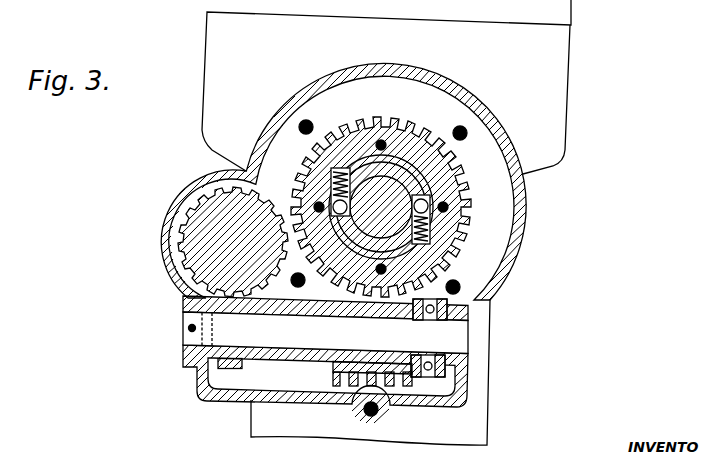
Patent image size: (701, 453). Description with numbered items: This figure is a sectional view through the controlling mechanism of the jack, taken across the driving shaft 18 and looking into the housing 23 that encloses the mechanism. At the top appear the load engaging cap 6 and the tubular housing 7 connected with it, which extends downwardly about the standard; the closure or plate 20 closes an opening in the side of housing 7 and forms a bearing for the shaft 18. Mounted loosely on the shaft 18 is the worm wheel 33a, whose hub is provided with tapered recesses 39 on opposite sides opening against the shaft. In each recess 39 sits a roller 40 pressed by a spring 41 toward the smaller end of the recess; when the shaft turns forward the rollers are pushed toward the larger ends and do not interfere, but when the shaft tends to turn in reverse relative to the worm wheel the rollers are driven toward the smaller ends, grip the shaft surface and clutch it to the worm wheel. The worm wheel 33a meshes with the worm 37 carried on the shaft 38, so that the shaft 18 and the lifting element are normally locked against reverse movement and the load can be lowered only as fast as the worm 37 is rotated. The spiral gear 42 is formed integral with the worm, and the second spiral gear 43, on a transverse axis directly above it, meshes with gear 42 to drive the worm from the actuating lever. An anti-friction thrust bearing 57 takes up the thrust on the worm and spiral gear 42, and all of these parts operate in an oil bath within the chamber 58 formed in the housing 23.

The load engaging device or cap 6 is at (566, 8).
The tubular housing 7 is at (558, 80).
The shaft 18 is at (392, 150).
The closure or plate 20 is at (442, 115).
The housing 23 is at (527, 228).
The worm wheel 33a is at (452, 176).
The worm 37 is at (330, 371).
The shaft 38 is at (458, 334).
The tapered recesses 39 is at (448, 203).
The roller 40 is at (318, 195).
The spring 41 is at (328, 180).
The spiral gear 42 is at (229, 364).
The second spiral gear 43 is at (181, 243).
The anti-friction thrust bearing 57 is at (443, 368).
The chamber 58 is at (281, 382).